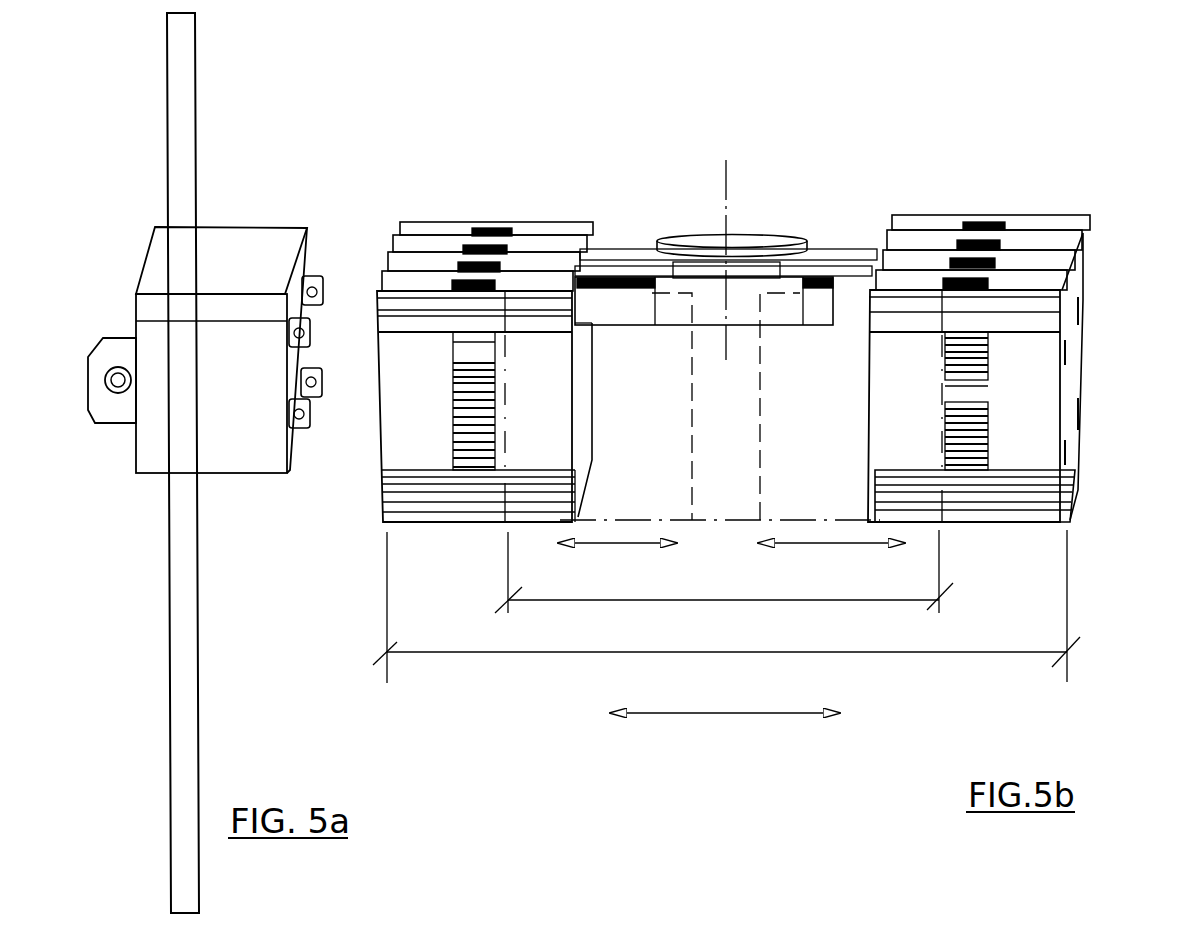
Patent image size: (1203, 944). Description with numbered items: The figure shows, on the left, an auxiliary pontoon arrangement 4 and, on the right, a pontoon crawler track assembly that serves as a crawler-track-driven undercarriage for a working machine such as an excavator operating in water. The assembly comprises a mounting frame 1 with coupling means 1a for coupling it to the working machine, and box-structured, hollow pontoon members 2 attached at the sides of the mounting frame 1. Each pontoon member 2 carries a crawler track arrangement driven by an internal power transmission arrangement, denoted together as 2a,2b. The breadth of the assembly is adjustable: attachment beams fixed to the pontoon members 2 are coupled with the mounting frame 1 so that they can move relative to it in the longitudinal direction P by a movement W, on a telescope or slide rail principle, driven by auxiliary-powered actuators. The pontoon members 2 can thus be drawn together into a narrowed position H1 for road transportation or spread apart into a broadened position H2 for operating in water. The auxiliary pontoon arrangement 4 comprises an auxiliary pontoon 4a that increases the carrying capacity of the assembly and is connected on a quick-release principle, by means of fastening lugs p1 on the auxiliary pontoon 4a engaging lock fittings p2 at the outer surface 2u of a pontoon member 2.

In FIG. 5b, the mounting frame 1 is at (720, 425).
In FIG. 5b, the coupling means 1a is at (753, 240).
In FIG. 5b, the pontoon member 2 is at (446, 325).
In FIG. 5b, the internal power transmission arrangement, crawler track arrangement 2a,2b is at (452, 218).
In FIG. 5b, the outer surface 2u is at (1024, 312).
In FIG. 5a, the auxiliary pontoon arrangement 4 is at (222, 225).
In FIG. 5a, the auxiliary pontoon 4a is at (168, 457).
In FIG. 5a, the fastening lugs p1 is at (305, 327).
In FIG. 5b, the lock fittings p2 is at (1012, 215).
In FIG. 5b, the narrowed position H1 is at (567, 600).
In FIG. 5b, the broadened position H2 is at (726, 606).
In FIG. 5b, the longitudinal movement W is at (731, 560).
In FIG. 5b, the longitudinal direction P is at (725, 699).